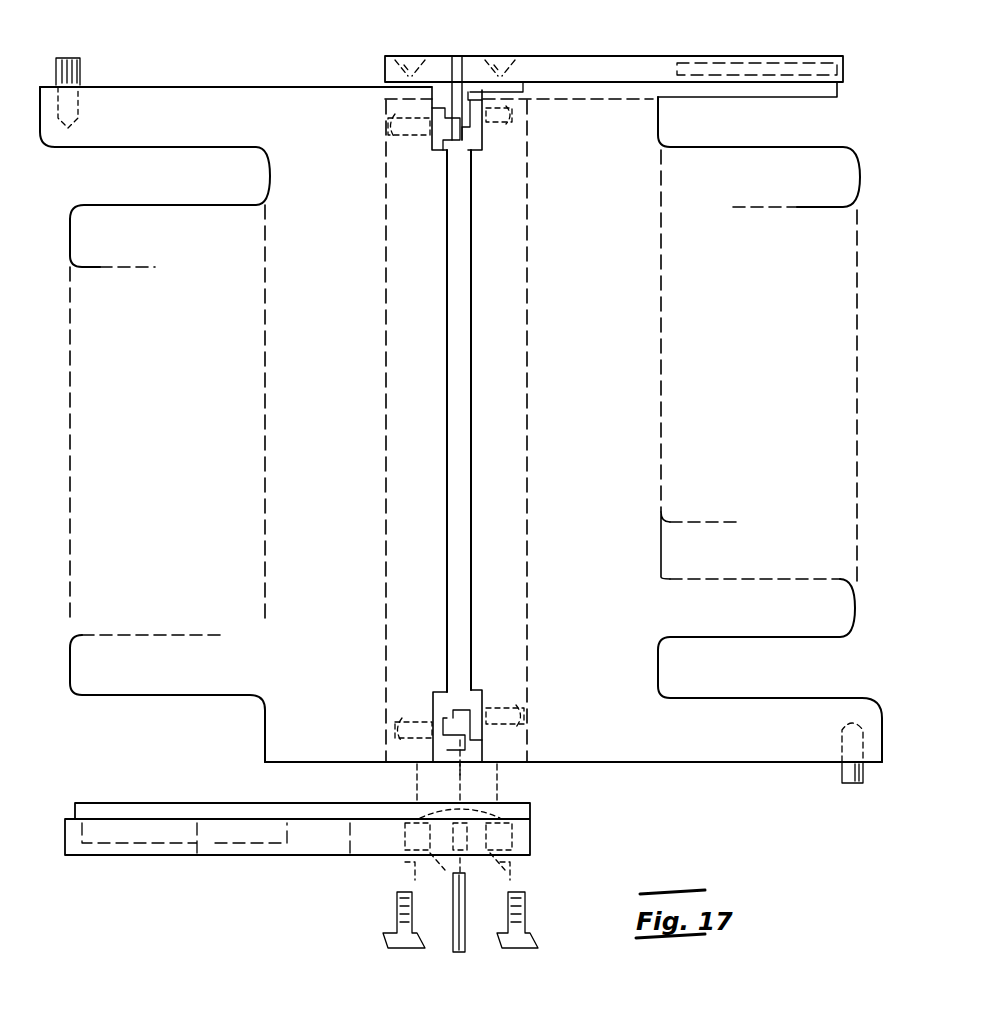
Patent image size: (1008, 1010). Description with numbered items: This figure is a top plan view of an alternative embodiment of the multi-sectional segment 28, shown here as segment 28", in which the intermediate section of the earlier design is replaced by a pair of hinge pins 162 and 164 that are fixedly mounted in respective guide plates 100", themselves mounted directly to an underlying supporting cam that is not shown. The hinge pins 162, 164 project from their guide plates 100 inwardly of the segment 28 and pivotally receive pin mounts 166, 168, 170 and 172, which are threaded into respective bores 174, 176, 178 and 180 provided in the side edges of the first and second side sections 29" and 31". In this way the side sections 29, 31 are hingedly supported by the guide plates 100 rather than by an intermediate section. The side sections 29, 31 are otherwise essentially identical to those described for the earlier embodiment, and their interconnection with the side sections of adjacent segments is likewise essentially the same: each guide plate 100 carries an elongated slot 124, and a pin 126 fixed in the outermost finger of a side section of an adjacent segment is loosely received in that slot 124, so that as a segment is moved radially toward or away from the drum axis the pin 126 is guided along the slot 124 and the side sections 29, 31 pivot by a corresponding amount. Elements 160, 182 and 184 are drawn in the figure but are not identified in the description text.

The multi-sectional segment 28 is at (224, 80).
The first side section 29 is at (662, 764).
The second side section 31 is at (265, 742).
The guide plate 100 is at (585, 57).
The elongated slot 124 is at (145, 828).
The pin 126 is at (842, 773).
The upper mounting plate 160 is at (680, 49).
The hinge pin 162 is at (458, 950).
The hinge pin 164 is at (460, 90).
The pin mount 166 is at (484, 690).
The pin mount 168 is at (484, 128).
The pin mount 170 is at (438, 722).
The pin mount 172 is at (430, 152).
The bore 174 is at (527, 716).
The bore 176 is at (516, 115).
The bore 178 is at (395, 728).
The bore 180 is at (398, 126).
The hidden fastener 182 is at (533, 826).
The countersunk fastener 184 is at (410, 72).